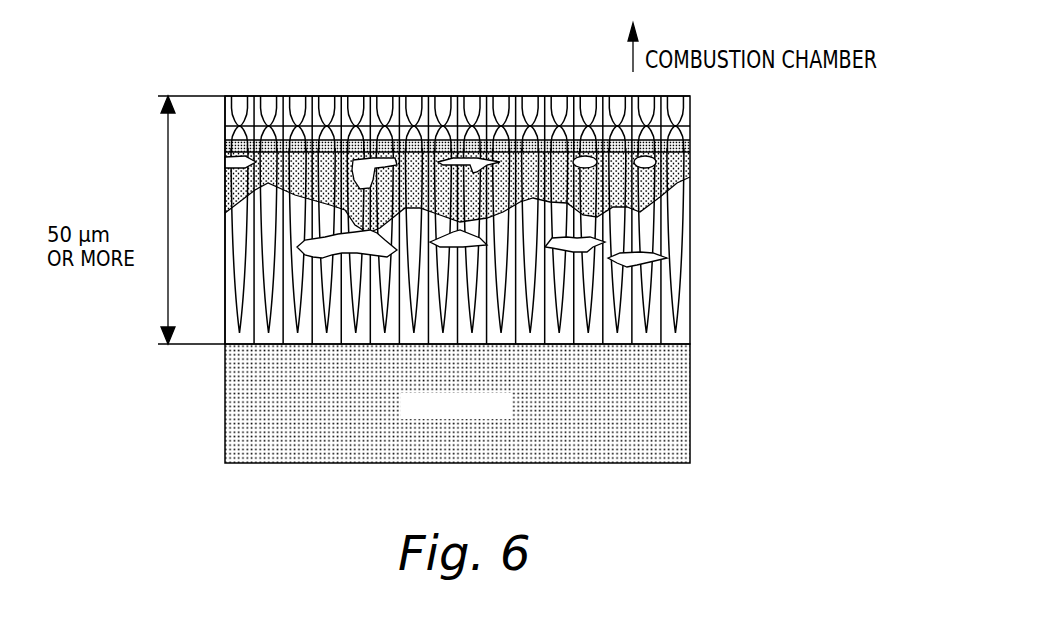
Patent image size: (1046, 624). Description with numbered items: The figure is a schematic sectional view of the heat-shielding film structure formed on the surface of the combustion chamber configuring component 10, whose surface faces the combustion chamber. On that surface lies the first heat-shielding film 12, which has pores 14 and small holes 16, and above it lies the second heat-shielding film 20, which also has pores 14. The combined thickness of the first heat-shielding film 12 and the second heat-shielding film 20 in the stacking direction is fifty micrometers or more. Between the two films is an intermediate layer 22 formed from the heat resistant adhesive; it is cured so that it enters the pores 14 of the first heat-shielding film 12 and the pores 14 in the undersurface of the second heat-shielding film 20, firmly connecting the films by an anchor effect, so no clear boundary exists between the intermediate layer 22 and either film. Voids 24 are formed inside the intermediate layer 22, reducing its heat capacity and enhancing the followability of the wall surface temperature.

The combustion chamber configuring component 10 is at (690, 397).
The first heat-shielding film 12 is at (690, 247).
The pores 14 is at (300, 96).
The small holes 16 is at (575, 237).
The second heat-shielding film 20 is at (690, 110).
The intermediate layer 22 is at (690, 173).
The voids 24 is at (378, 150).